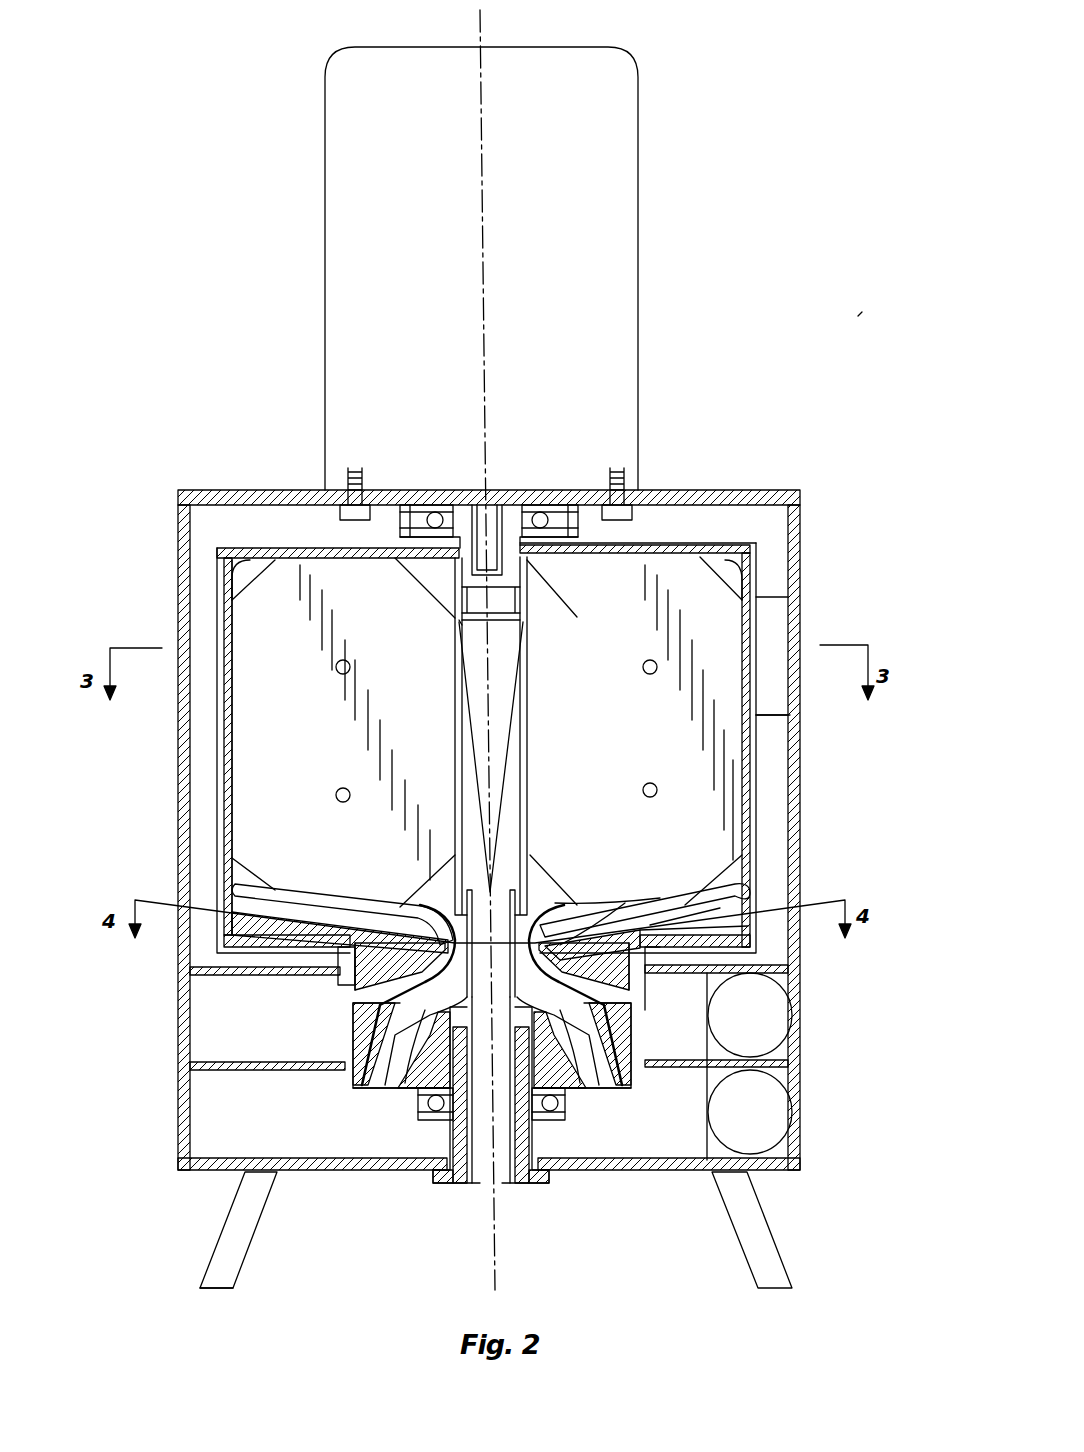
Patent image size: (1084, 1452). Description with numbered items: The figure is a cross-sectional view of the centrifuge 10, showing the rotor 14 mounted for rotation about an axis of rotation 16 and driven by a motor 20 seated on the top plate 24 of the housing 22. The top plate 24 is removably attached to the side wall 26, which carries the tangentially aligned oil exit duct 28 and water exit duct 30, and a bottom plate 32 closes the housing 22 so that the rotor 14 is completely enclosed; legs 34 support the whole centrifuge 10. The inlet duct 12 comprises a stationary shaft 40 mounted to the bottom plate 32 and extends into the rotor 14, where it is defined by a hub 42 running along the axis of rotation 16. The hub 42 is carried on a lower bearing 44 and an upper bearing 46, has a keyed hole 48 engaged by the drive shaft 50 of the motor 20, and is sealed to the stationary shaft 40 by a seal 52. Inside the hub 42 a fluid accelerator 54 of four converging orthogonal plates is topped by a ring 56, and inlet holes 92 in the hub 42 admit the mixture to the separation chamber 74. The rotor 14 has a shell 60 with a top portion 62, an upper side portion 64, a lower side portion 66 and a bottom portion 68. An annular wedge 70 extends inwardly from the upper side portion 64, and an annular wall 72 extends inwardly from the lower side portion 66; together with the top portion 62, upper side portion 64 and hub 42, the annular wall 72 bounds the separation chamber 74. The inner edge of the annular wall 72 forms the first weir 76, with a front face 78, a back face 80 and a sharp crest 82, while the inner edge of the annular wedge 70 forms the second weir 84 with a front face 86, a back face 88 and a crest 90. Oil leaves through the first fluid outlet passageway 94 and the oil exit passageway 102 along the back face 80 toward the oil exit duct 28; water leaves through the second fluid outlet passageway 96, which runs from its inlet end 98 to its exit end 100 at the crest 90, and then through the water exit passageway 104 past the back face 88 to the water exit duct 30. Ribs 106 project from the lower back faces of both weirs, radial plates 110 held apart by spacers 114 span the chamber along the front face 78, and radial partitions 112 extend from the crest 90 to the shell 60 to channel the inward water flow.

The centrifuge 10 is at (862, 312).
The inlet duct 12 is at (510, 1200).
The rotor 14 is at (225, 792).
The axis of rotation 16 is at (484, 45).
The motor 20 is at (481, 268).
The housing 22 is at (778, 488).
The top plate 24 is at (205, 492).
The side wall 26 is at (800, 640).
The oil exit duct 28 is at (750, 1112).
The water exit duct 30 is at (750, 1015).
The bottom plate 32 is at (215, 1172).
The legs 34 is at (210, 1290).
The stationary shaft 40 is at (560, 1180).
The hub 42 is at (530, 718).
The lower bearing 44 is at (418, 1112).
The upper bearing 46 is at (545, 518).
The keyed hole 48 is at (470, 512).
The drive shaft 50 is at (497, 528).
The seal 52 is at (430, 1052).
The fluid accelerator 54 is at (508, 655).
The ring 56 is at (455, 630).
The shell 60 is at (760, 715).
The top portion 62 is at (672, 544).
The upper side portion 64 is at (745, 750).
The lower side portion 66 is at (792, 1063).
The bottom portion 68 is at (760, 950).
The annular wedge 70 is at (792, 968).
The annular wall 72 is at (626, 896).
The separation chamber 74 is at (650, 711).
The first weir 76 is at (560, 900).
The front face 78 is at (580, 905).
The back face 80 is at (610, 1070).
The crest 82 is at (555, 898).
The second weir 84 is at (640, 920).
The front face 86 is at (690, 905).
The back face 88 is at (625, 1070).
The crest 90 is at (650, 925).
The inlet holes 92 is at (522, 610).
The first fluid outlet passageway 94 is at (440, 860).
The second fluid outlet passageway 96 is at (300, 912).
The inlet end 98 is at (250, 884).
The exit end 100 is at (420, 930).
The oil exit passageway 102 is at (267, 1093).
The water exit passageway 104 is at (265, 989).
The ribs 106 is at (635, 978).
The radial plates 110 is at (285, 705).
The radial partitions 112 is at (240, 935).
The spacers 114 is at (652, 660).